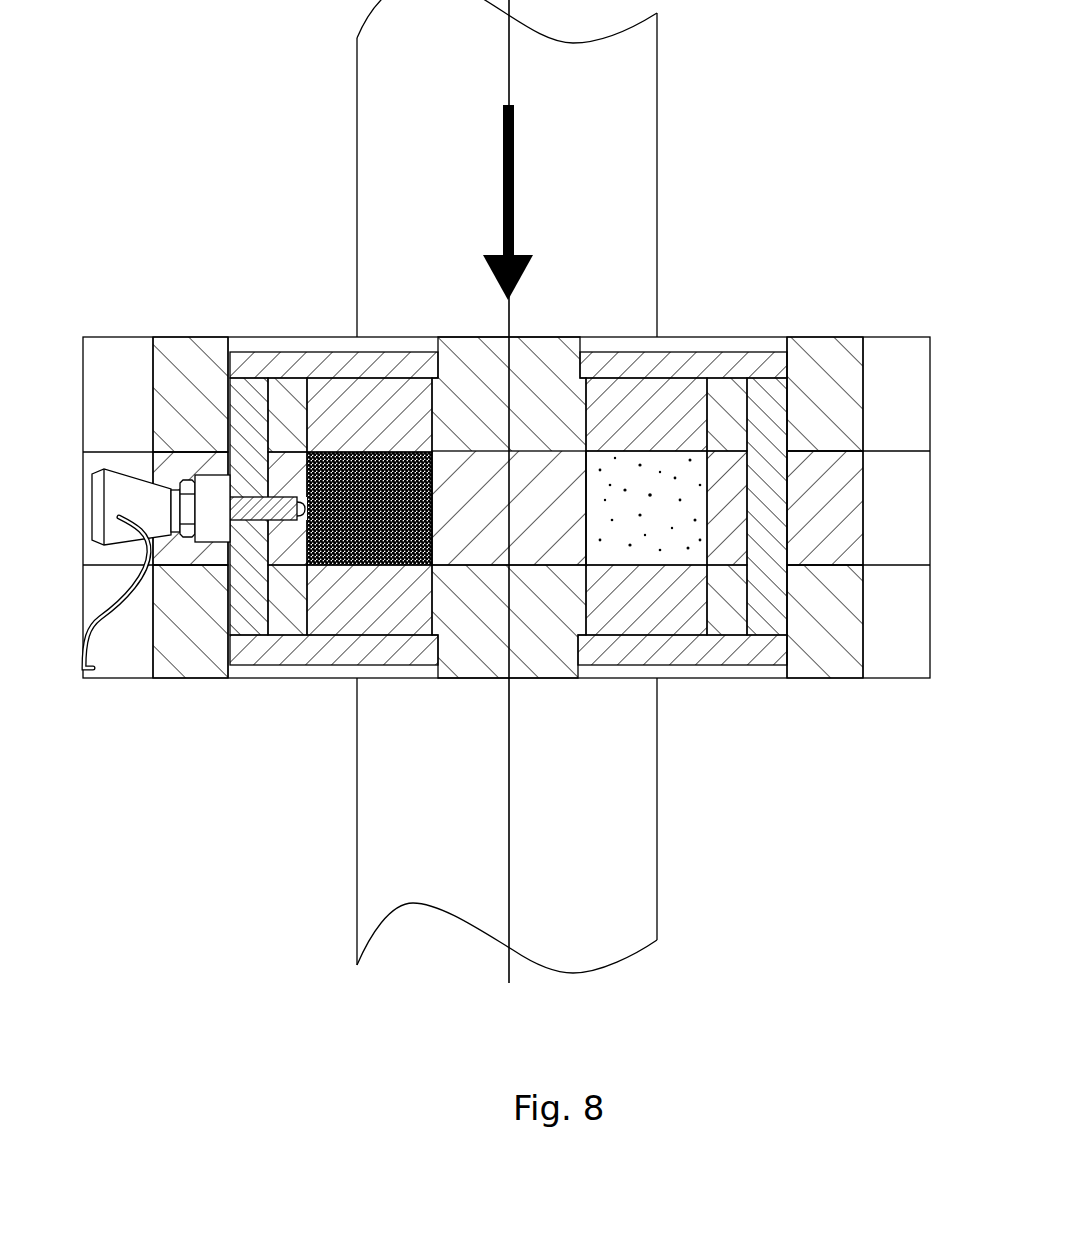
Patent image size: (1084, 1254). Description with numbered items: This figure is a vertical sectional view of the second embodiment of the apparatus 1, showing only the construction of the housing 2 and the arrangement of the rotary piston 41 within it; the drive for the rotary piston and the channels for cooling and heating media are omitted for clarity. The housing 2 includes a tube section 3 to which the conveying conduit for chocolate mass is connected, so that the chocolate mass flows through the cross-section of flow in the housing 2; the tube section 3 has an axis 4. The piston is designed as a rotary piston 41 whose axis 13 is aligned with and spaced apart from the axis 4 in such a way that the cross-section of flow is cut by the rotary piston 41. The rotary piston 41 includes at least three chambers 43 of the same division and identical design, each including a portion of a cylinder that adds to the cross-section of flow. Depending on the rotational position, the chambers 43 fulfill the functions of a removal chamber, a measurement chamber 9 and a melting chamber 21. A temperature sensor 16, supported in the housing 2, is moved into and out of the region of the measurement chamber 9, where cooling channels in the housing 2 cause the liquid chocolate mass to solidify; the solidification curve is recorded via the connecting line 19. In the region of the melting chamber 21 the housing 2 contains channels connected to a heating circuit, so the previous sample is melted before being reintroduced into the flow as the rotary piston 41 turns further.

The apparatus 1 is at (506, 474).
The housing 2 is at (672, 385).
The tube section 3 is at (575, 109).
The axis 4 is at (512, 753).
The measurement chamber 9 is at (380, 523).
The axis of the rotary piston 13 is at (632, 337).
The temperature sensor 16 is at (290, 520).
The connecting line 19 is at (157, 628).
The melting chamber 21 is at (731, 619).
The rotary piston 41 is at (471, 515).
The chambers 43 is at (577, 619).